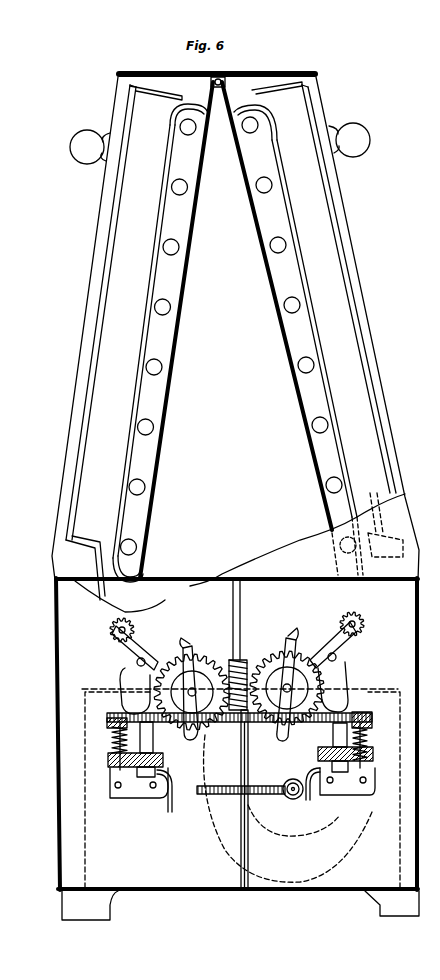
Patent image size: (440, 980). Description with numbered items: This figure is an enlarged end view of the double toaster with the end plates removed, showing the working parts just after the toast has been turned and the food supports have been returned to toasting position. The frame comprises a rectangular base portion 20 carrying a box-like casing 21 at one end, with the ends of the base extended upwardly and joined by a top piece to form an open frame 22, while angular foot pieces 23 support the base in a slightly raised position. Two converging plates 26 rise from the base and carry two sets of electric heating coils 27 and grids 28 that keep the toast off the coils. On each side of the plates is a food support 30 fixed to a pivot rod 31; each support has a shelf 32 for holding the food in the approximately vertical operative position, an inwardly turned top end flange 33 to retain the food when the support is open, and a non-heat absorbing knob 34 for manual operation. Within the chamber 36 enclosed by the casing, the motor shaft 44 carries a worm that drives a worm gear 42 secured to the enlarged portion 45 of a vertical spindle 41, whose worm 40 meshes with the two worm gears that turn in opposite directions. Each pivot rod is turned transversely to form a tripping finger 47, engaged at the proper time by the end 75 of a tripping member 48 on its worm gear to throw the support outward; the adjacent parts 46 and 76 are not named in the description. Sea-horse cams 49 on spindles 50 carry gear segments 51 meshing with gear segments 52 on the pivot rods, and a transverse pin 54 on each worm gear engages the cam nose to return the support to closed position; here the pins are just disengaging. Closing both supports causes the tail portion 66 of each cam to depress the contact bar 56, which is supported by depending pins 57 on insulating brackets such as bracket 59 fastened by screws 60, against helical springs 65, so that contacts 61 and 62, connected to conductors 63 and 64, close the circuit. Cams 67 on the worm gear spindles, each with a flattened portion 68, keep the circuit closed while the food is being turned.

The base portion 20 is at (80, 838).
The casing 21 is at (50, 718).
The open frame 22 is at (291, 71).
The foot pieces 23 is at (108, 912).
The converging plates 26 is at (182, 327).
The electric heating coils 27 is at (161, 371).
The grids 28 is at (147, 319).
The food-supports 30 is at (100, 303).
The pivot rod 31 is at (122, 617).
The shelf 32 is at (79, 545).
The top end flange 33 is at (170, 94).
The knob 34 is at (82, 138).
The chamber 36 is at (252, 627).
The worm 40 is at (250, 652).
The vertical spindle 41 is at (240, 866).
The worm gear 42 is at (230, 795).
The motor shaft 44 is at (294, 800).
The enlarged portion 45 is at (238, 772).
The pawl tip 46 is at (238, 631).
The tripping finger 47 is at (174, 656).
The tripping member 48 is at (189, 654).
The sea-horse cams 49 is at (120, 700).
The spindles 50 is at (120, 672).
The gear segment 51 is at (115, 648).
The gear segment 52 is at (108, 632).
The transverse pin 54 is at (106, 760).
The contact bar 56 is at (145, 800).
The depending pins 57 is at (345, 855).
The bracket 59 is at (355, 796).
The screws 60 is at (118, 789).
The contact 61 is at (156, 740).
The contact 62 is at (332, 738).
The conductor 63 is at (174, 790).
The conductor 64 is at (312, 827).
The helical springs 65 is at (110, 738).
The tail-portion 66 is at (124, 693).
The cams 67 is at (176, 745).
The flattened portion 68 is at (222, 668).
The ends 75 is at (150, 762).
The lever 76 is at (163, 640).